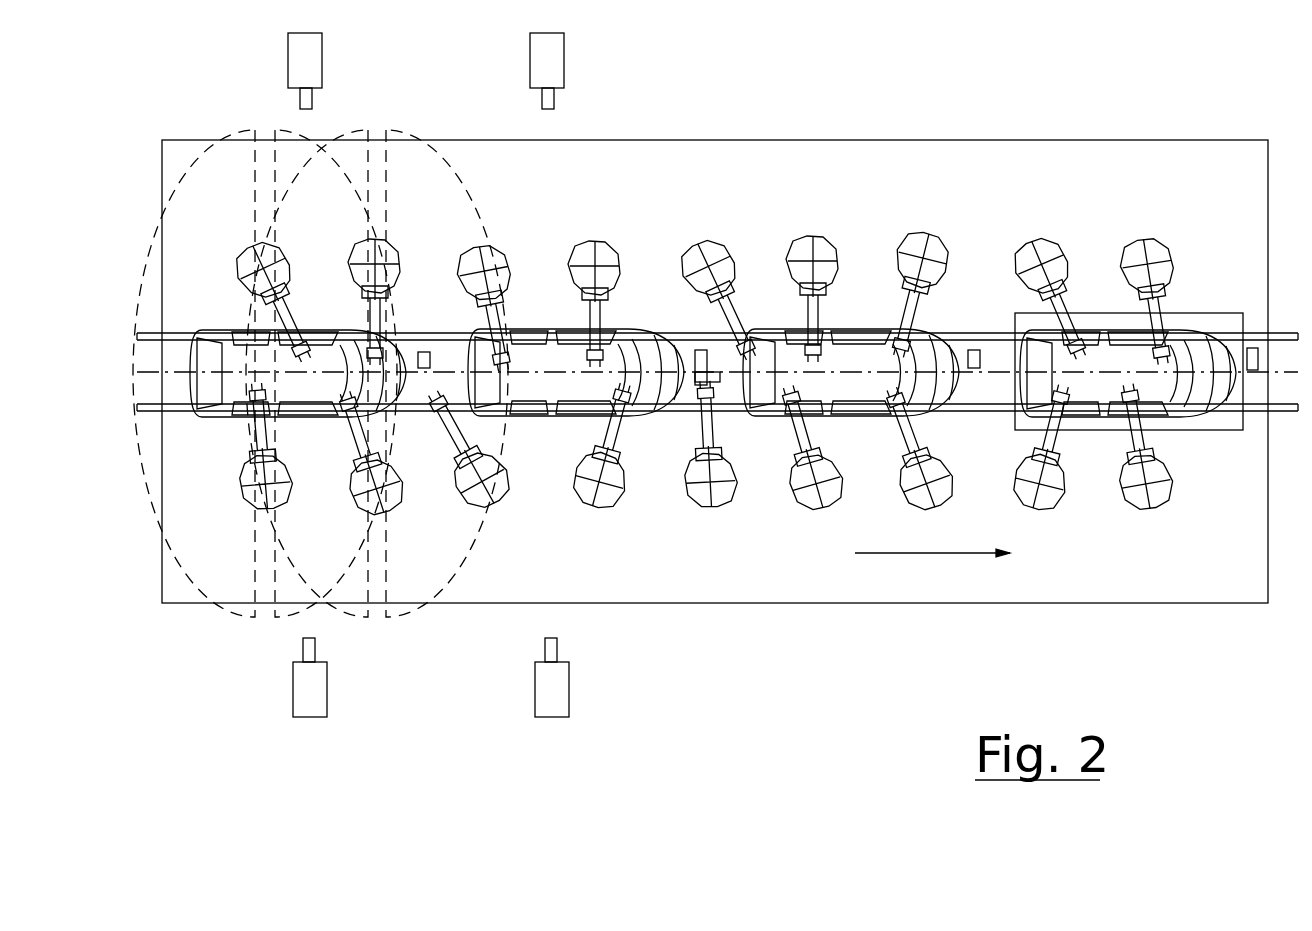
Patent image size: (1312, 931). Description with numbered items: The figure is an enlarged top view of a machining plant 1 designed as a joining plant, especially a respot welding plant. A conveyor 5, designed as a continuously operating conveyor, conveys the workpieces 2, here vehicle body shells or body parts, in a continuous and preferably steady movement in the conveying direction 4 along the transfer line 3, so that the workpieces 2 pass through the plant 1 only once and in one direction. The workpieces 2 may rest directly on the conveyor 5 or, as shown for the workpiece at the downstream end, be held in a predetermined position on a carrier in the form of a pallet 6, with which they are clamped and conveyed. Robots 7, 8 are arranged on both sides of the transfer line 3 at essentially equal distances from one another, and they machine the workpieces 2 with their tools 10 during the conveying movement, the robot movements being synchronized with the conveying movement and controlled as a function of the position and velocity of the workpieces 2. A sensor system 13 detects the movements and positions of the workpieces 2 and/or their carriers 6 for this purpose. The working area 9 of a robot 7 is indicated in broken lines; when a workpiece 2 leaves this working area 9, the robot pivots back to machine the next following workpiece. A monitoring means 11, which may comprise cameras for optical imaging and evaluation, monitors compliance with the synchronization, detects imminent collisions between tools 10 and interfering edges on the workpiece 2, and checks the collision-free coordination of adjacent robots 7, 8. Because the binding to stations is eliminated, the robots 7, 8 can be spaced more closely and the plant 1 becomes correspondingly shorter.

The machining plant 1 is at (1097, 138).
The workpiece 2 is at (850, 355).
The transfer line 3 is at (1000, 365).
The conveying direction 4 is at (938, 555).
The conveyor 5 is at (963, 333).
The pallet 6 is at (1230, 432).
The robot 7 is at (695, 492).
The robot 8 is at (698, 258).
The working area 9 is at (222, 132).
The tool 10 is at (722, 392).
The monitoring means 11 is at (540, 66).
The sensor system 13 is at (424, 352).